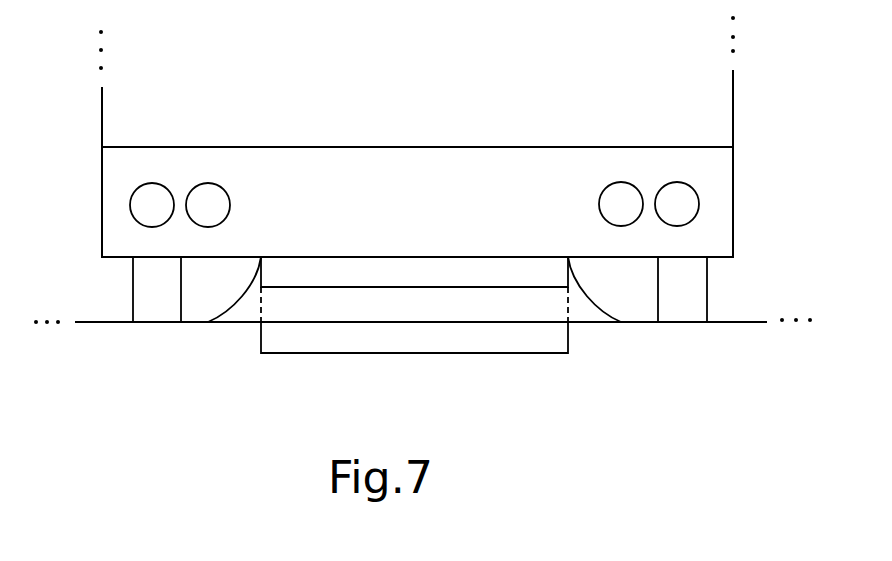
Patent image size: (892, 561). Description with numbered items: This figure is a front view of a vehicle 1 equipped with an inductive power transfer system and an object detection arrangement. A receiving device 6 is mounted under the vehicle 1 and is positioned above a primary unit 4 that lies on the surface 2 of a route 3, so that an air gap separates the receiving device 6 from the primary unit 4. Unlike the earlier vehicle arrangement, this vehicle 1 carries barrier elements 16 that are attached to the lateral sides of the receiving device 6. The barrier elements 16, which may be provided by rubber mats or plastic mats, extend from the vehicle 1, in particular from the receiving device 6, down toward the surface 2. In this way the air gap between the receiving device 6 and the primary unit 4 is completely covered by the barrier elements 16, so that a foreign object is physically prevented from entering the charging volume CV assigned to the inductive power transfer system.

The vehicle 1 is at (735, 160).
The surface 2 is at (727, 320).
The route 3 is at (735, 373).
The primary unit 4 is at (387, 340).
The receiving device 6 is at (395, 272).
The barrier elements 16 is at (243, 297).
The charging volume CV is at (473, 303).